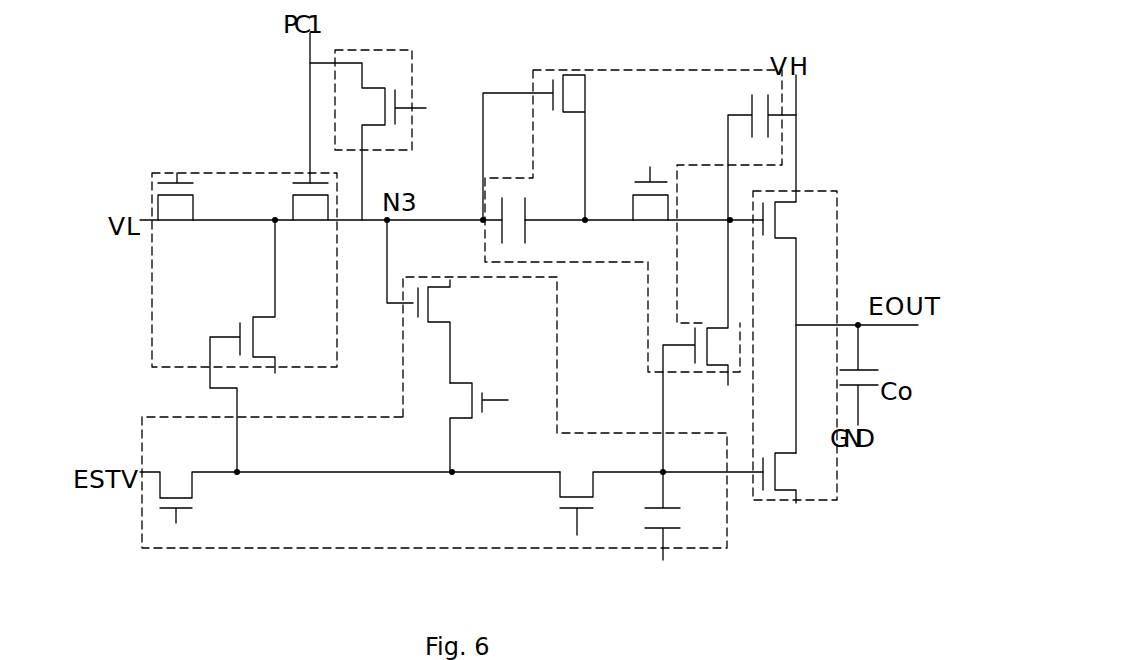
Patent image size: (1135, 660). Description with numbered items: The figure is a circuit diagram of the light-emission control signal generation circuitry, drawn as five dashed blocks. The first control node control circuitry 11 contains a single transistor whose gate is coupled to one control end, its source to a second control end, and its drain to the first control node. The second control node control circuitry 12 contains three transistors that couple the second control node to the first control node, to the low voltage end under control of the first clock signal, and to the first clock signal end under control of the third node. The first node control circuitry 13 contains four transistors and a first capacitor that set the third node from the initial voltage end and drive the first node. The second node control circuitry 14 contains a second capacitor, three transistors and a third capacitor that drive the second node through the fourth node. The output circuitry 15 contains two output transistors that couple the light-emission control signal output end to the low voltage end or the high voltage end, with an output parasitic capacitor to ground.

The first control node control circuitry 11 is at (377, 50).
The second control node control circuitry 12 is at (274, 173).
The first node control circuitry 13 is at (557, 374).
The second node control circuitry 14 is at (677, 70).
The output circuitry 15 is at (820, 191).